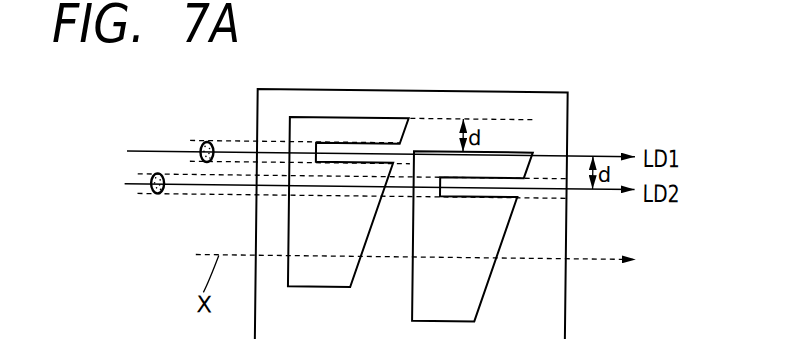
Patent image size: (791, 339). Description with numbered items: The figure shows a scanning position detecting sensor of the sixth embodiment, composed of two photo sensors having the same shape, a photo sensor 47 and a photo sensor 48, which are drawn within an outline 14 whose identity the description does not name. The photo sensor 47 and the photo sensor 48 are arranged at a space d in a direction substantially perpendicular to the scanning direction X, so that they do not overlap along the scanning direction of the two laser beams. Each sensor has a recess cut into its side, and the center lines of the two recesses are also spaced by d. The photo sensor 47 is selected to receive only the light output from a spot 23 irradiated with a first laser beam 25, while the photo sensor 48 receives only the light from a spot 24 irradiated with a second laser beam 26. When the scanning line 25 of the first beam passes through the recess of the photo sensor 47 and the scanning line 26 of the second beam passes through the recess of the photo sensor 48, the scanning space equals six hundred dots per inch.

The aperture member 14 is at (457, 89).
The spot 23 is at (207, 142).
The spot 24 is at (159, 195).
The laser beam 25 is at (248, 146).
The laser beam 26 is at (202, 186).
The photo sensor 47 is at (313, 287).
The photo sensor 48 is at (413, 299).